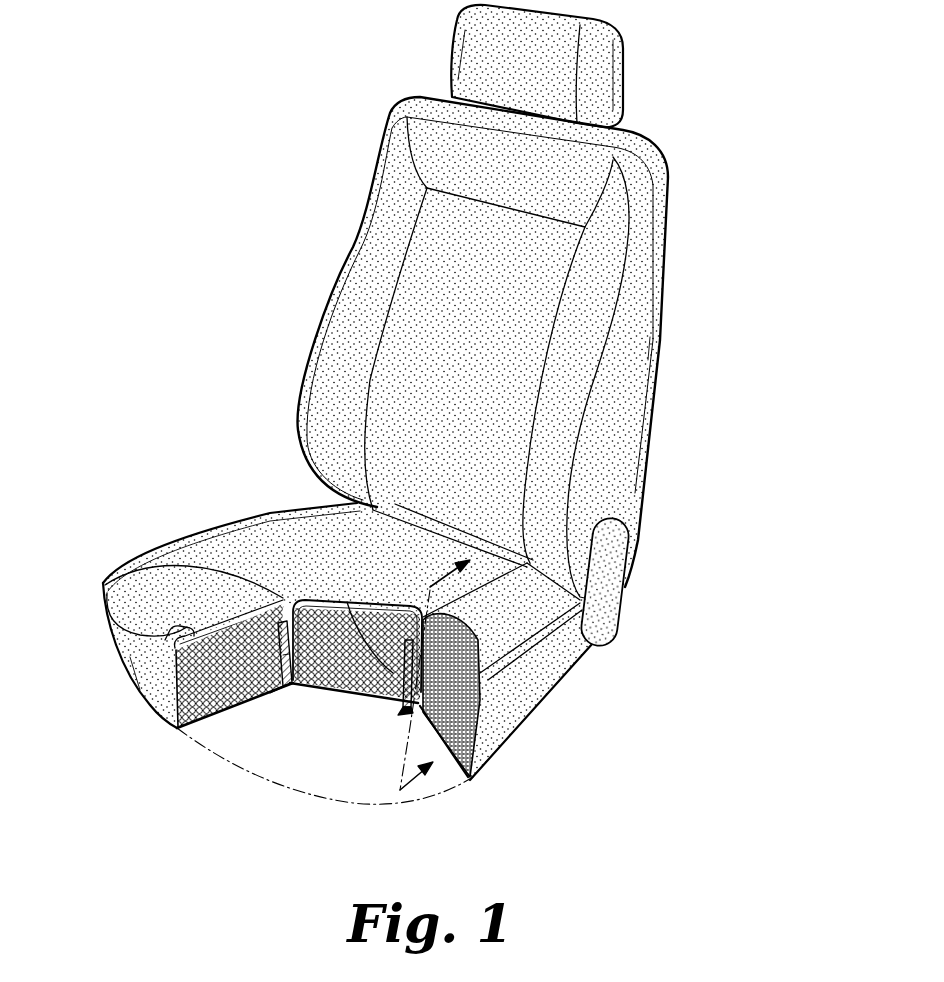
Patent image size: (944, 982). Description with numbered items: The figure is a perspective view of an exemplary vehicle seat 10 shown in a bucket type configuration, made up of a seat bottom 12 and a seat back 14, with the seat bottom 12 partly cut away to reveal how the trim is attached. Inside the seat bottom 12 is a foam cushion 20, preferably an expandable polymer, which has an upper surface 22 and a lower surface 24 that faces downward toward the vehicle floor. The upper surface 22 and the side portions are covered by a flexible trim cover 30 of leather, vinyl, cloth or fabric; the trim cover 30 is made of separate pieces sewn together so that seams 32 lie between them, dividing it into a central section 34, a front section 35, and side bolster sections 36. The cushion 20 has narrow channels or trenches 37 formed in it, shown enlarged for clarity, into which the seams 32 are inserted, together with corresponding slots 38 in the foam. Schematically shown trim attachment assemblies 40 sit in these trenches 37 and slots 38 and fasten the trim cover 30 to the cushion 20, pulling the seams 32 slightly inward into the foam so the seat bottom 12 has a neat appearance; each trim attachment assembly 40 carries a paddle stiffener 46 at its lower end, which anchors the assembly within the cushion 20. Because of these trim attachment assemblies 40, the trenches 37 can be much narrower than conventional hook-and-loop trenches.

The seat 10 is at (451, 425).
The seat bottom 12 is at (547, 670).
The seat back 14 is at (667, 357).
The foam cushion 20 is at (215, 720).
The upper surface 22 is at (233, 613).
The lower surface 24 is at (237, 712).
The trim cover 30 is at (170, 637).
The seams 32 is at (293, 592).
The central section 34 is at (385, 564).
The front section 35 is at (153, 603).
The side bolster sections 36 is at (137, 552).
The trenches 37 is at (290, 637).
The slots 38 is at (392, 713).
The trim attachment assemblies 40 is at (290, 670).
The paddle stiffener 46 is at (393, 713).